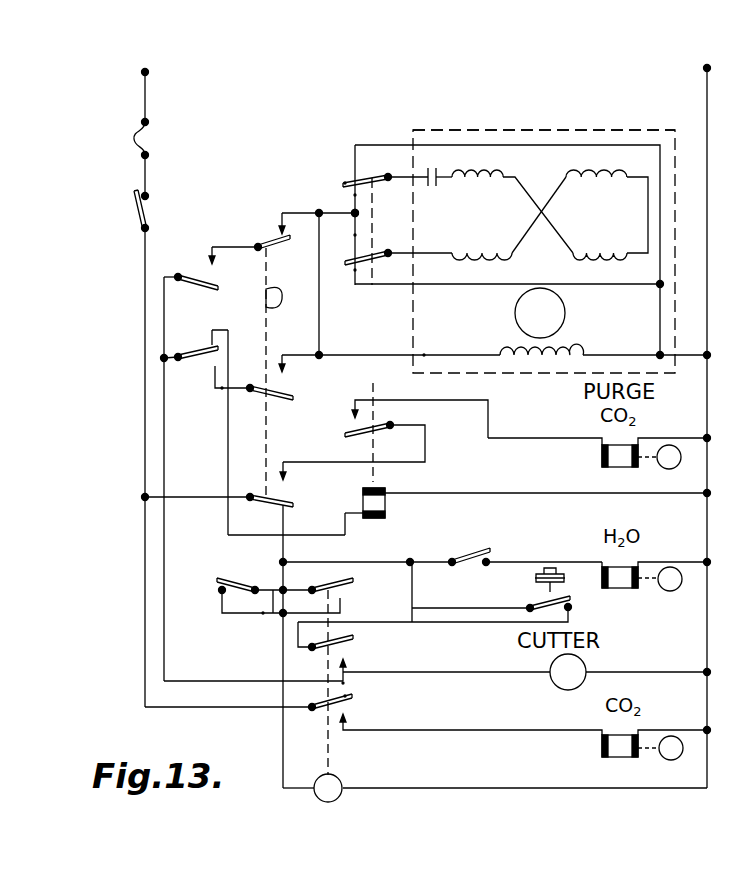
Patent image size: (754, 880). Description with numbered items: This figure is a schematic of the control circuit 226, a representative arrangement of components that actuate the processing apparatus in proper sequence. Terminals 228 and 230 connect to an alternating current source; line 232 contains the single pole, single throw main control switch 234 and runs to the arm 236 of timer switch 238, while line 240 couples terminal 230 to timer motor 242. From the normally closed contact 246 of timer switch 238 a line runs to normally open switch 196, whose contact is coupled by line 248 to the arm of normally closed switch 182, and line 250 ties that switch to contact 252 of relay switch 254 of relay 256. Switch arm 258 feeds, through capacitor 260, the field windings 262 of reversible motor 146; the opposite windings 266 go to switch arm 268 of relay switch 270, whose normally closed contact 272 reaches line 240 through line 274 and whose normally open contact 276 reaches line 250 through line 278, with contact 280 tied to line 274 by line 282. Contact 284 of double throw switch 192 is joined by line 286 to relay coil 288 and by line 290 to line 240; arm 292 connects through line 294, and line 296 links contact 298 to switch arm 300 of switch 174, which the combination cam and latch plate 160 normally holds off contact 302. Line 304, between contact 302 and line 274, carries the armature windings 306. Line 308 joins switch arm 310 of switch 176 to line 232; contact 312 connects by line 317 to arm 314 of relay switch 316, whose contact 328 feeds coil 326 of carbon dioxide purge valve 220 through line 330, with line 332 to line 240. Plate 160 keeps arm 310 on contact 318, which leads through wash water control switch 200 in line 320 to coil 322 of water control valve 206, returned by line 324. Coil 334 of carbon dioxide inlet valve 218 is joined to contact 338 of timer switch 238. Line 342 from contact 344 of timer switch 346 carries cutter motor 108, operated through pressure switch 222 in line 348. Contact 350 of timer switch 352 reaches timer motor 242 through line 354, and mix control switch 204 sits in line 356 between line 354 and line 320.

The terminal 228 is at (148, 70).
The terminal 230 is at (704, 65).
The control circuit 226 is at (523, 222).
The reversible motor 146 is at (622, 128).
The line 282 is at (648, 145).
The contact 280 is at (348, 153).
The relay switch 254 is at (388, 176).
The switch arm 258 is at (343, 178).
The switch 182 is at (258, 240).
The line 250 is at (310, 209).
The line 248 is at (244, 238).
The switch 196 is at (178, 272).
The main control switch 234 is at (140, 228).
The contact 252 is at (362, 195).
The line 278 is at (360, 223).
The capacitor 260 is at (446, 178).
The field windings 262 is at (510, 179).
The contact 276 is at (350, 237).
The relay switch 270 is at (395, 245).
The windings 266 is at (512, 258).
The switch arm 268 is at (366, 264).
The contact 272 is at (354, 272).
The line 240 is at (719, 210).
The line 274 is at (625, 286).
The contact 284 is at (212, 340).
The combination cam and latch plate 160 is at (278, 289).
The arm 292 is at (195, 350).
The line 294 is at (162, 360).
The switch 192 is at (178, 361).
The contact 298 is at (218, 368).
The line 296 is at (224, 388).
The switch 174 is at (250, 395).
The switch arm 300 is at (285, 400).
The contact 302 is at (288, 368).
The line 304 is at (424, 354).
The armature windings 306 is at (498, 352).
The contact 328 is at (366, 402).
The relay switch 316 is at (392, 424).
The line 330 is at (520, 425).
The line 332 is at (646, 437).
The switch arm 314 is at (349, 438).
The line 317 is at (428, 446).
The line 290 is at (461, 493).
The coil 326 is at (612, 468).
The carbon dioxide purge valve 220 is at (682, 452).
The line 286 is at (227, 432).
The line 232 is at (145, 474).
The switch 176 is at (244, 484).
The contact 312 is at (288, 472).
The relay 256 is at (388, 488).
The line 308 is at (200, 497).
The switch arm 310 is at (274, 506).
The contact 318 is at (286, 514).
The coil 288 is at (386, 509).
The wash water control switch 200 is at (485, 548).
The line 320 is at (354, 564).
The line 324 is at (662, 562).
The timer switch 352 is at (312, 590).
The contact 350 is at (346, 598).
The line 348 is at (418, 594).
The pressure switch 222 is at (530, 606).
The mix control switch 204 is at (254, 584).
The line 354 is at (344, 610).
The coil 322 is at (622, 592).
The water control valve 206 is at (690, 590).
The line 356 is at (262, 614).
The timer switch 346 is at (312, 647).
The contact 344 is at (348, 662).
The line 342 is at (450, 662).
The cutter motor 108 is at (554, 680).
The timer switch 238 is at (312, 707).
The contact 246 is at (346, 684).
The arm 236 is at (338, 708).
The contact 338 is at (347, 720).
The coil 334 is at (612, 758).
The carbon dioxide inlet valve 218 is at (665, 762).
The timer motor 242 is at (342, 780).